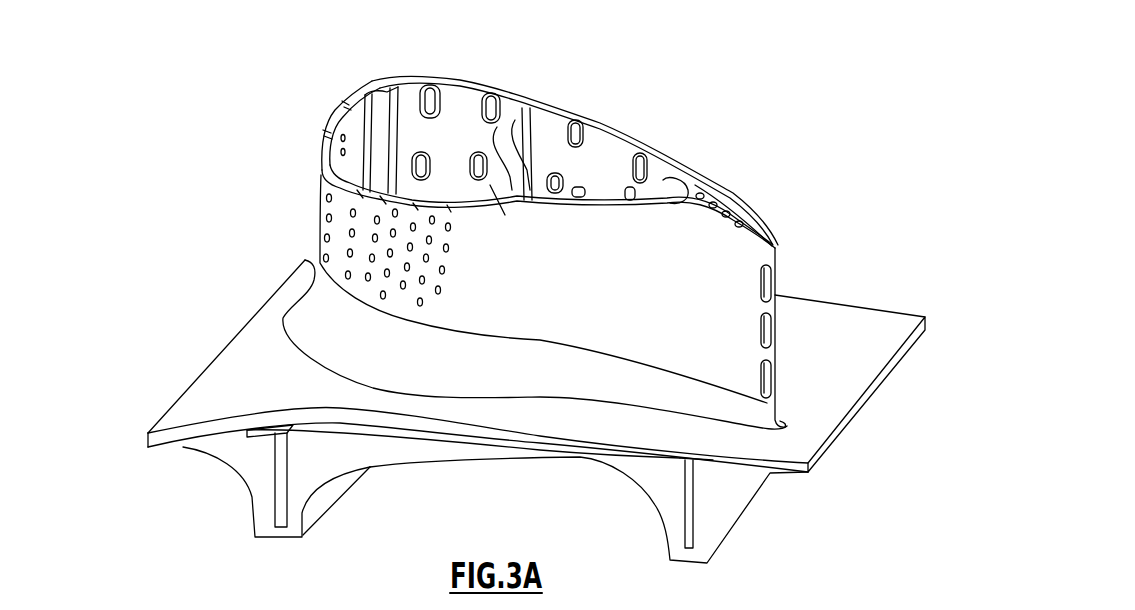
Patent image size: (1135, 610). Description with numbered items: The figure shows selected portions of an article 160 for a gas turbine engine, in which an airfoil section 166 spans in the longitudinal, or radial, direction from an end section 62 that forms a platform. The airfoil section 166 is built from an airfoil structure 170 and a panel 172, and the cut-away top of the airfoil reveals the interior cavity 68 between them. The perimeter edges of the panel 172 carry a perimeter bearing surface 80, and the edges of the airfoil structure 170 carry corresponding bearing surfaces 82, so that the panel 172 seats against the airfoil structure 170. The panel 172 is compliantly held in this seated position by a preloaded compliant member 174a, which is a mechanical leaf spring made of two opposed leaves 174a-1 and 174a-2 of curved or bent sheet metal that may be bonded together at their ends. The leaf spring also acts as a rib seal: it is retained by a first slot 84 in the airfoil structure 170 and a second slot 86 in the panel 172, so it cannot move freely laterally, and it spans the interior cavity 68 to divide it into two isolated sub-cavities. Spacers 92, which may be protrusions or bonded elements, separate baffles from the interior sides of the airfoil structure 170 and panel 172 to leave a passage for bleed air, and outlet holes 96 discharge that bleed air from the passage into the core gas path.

The article 160 is at (187, 504).
The end section 62 is at (786, 443).
The interior cavity 68 is at (357, 113).
The perimeter bearing surface 80 is at (692, 183).
The bearing surfaces 82 is at (700, 198).
The first slot 84 is at (497, 177).
The second slot 86 is at (524, 110).
The spacers 92 is at (335, 130).
The outlet holes 96 is at (350, 253).
The airfoil section 166 is at (734, 345).
The airfoil structure 170 is at (728, 269).
The panel 172 is at (642, 125).
The preloaded compliant member 174a is at (598, 125).
The leaf 174a-1 is at (500, 185).
The leaf 174a-2 is at (535, 170).